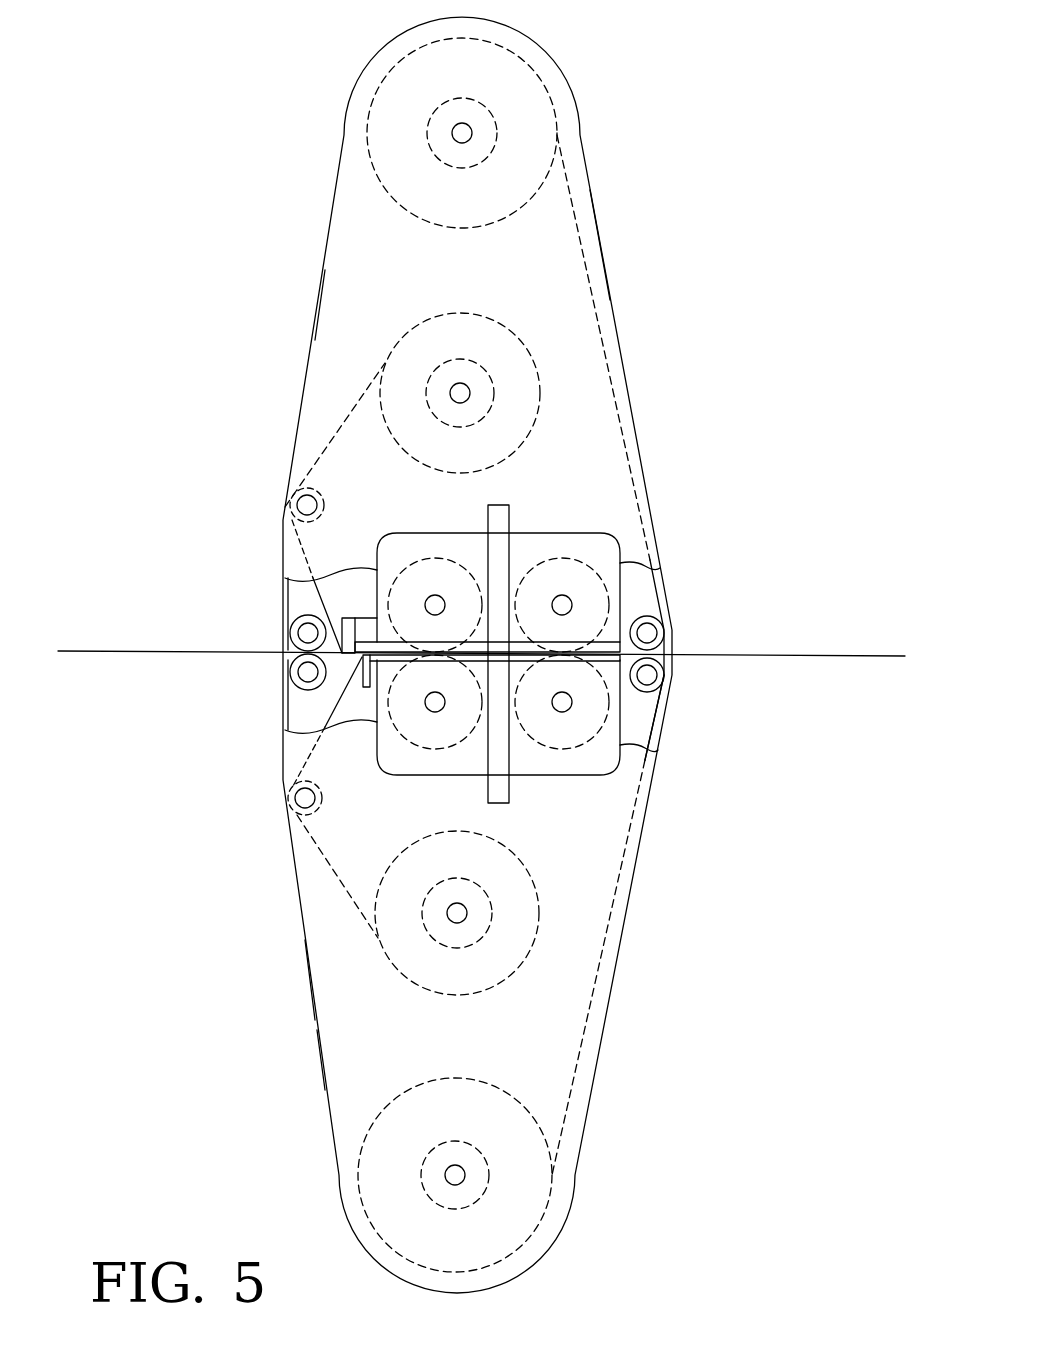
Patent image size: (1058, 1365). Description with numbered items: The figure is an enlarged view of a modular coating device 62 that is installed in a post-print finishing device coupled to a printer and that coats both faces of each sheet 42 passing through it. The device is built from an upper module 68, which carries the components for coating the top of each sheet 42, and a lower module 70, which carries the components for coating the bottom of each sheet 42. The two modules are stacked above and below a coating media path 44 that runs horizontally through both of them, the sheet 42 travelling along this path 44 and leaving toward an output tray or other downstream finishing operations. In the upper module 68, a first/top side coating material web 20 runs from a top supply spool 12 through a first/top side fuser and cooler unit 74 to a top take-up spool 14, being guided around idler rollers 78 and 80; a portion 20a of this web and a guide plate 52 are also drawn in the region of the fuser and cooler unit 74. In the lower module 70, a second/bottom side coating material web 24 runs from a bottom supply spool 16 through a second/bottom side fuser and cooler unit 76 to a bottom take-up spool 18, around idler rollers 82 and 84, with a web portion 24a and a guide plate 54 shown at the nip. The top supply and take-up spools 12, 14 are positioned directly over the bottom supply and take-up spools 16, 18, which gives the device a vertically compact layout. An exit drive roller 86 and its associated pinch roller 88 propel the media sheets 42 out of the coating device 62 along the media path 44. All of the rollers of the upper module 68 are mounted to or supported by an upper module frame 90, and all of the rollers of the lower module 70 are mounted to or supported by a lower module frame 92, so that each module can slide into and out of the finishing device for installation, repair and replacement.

The first/top side coating material web supply spool 12 is at (405, 205).
The first/top side web take-up spool 14 is at (503, 322).
The second/bottom side coating material web supply spool 16 is at (397, 1100).
The second/bottom side web take-up spool 18 is at (500, 978).
The first/top side coating material web 20 is at (628, 466).
The belt portion 20a is at (349, 412).
The second/bottom side coating material web 24 is at (626, 840).
The belt portion 24a is at (343, 886).
The sheet 42 is at (805, 657).
The coating media path 44 is at (108, 628).
The upper guide plate 52 is at (347, 618).
The lower guide plate 54 is at (366, 688).
The modular coating device 62 is at (700, 474).
The upper module 68 is at (588, 172).
The lower module 70 is at (311, 988).
The first/top side fuser and cooler unit 74 is at (377, 537).
The second/bottom side fuser and cooler unit 76 is at (377, 768).
The idler roller 78 is at (659, 623).
The idler roller 80 is at (296, 506).
The idler roller 82 is at (662, 677).
The idler roller 84 is at (295, 798).
The exit drive roller 86 is at (290, 633).
The pinch roller 88 is at (290, 670).
The upper module frame 90 is at (320, 283).
The lower module frame 92 is at (322, 1050).